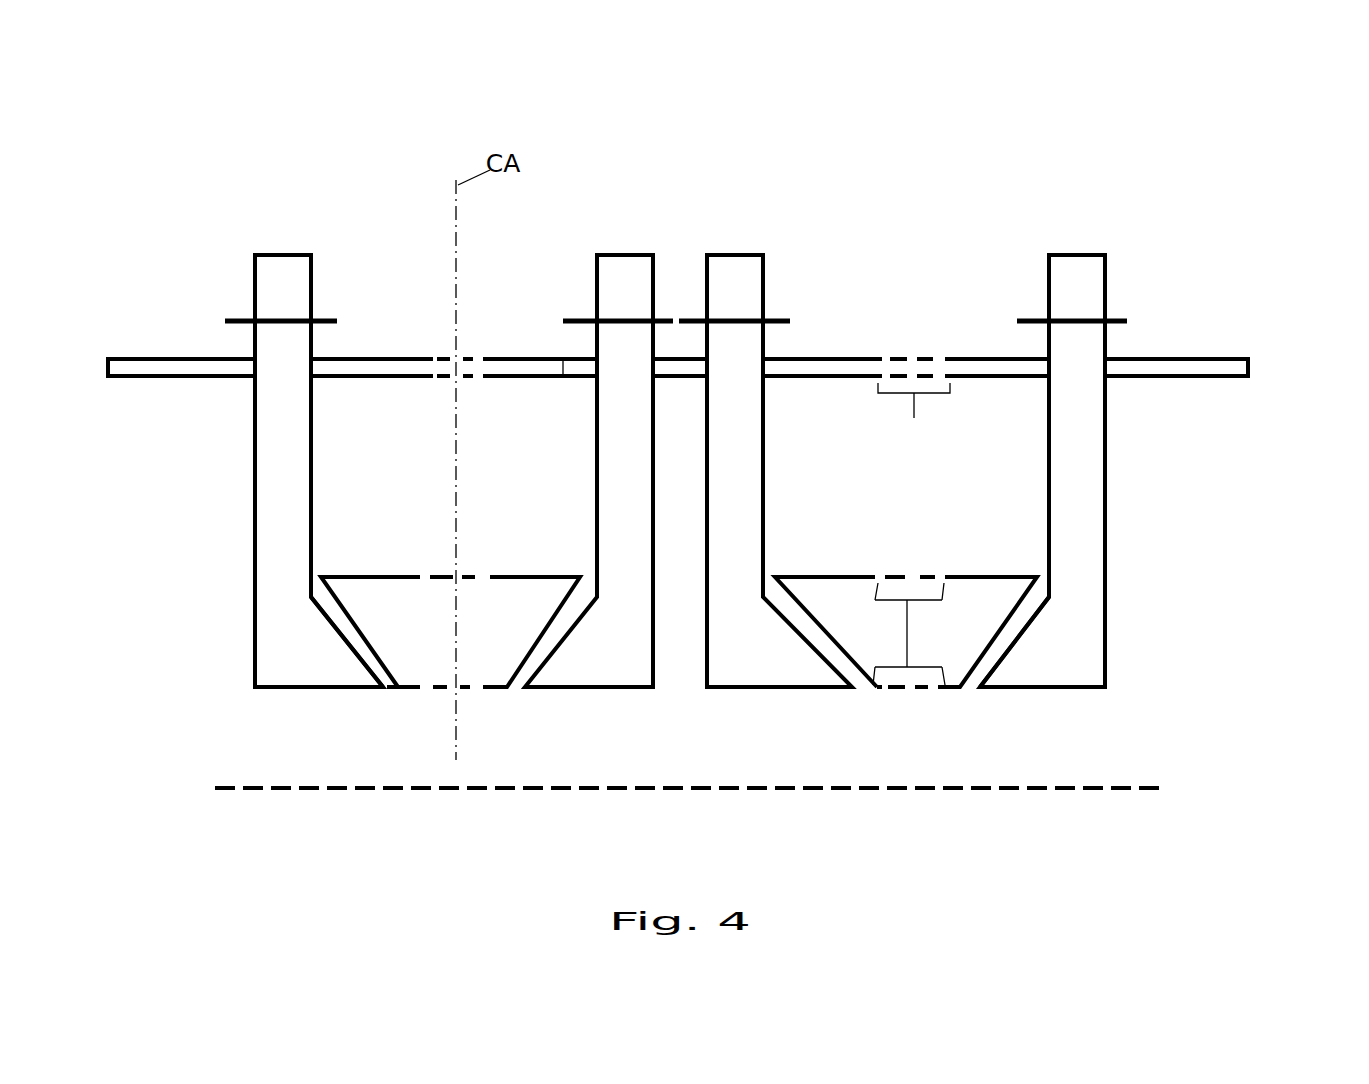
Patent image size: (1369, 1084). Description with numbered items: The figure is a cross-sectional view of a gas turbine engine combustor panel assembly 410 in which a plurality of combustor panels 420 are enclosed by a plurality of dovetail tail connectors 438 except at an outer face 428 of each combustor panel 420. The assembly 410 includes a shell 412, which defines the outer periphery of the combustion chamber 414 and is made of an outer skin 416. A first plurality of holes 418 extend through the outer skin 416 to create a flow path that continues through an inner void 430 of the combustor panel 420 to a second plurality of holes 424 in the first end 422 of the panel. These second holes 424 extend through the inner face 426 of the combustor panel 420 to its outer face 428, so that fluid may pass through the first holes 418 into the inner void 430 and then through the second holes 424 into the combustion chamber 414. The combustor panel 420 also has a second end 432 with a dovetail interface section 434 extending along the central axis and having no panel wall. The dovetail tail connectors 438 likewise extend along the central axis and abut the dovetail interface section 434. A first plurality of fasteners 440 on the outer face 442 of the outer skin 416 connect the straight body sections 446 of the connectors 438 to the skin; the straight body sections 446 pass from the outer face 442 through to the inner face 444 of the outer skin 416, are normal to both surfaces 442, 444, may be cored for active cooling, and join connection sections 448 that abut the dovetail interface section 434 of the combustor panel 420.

The gas turbine engine combustor panel assembly 410 is at (187, 155).
The shell 412 is at (1226, 393).
The combustion chamber 414 is at (1126, 786).
The outer skin 416 is at (116, 333).
The first plurality of holes 418 is at (914, 415).
The combustor panel 420 is at (489, 698).
The first end 422 is at (392, 694).
The second plurality of holes 424 is at (907, 623).
The inner face 426 is at (392, 580).
The outer face 428 is at (440, 692).
The inner void 430 is at (411, 464).
The second end 432 is at (329, 555).
The dovetail interface section 434 is at (337, 603).
The dovetail tail connectors 438 is at (725, 250).
The first plurality of fasteners 440 is at (338, 322).
The outer face of outer skin 442 is at (175, 353).
The inner face of outer skin 444 is at (148, 378).
The straight body sections 446 is at (1110, 462).
The connection sections 448 is at (1012, 648).